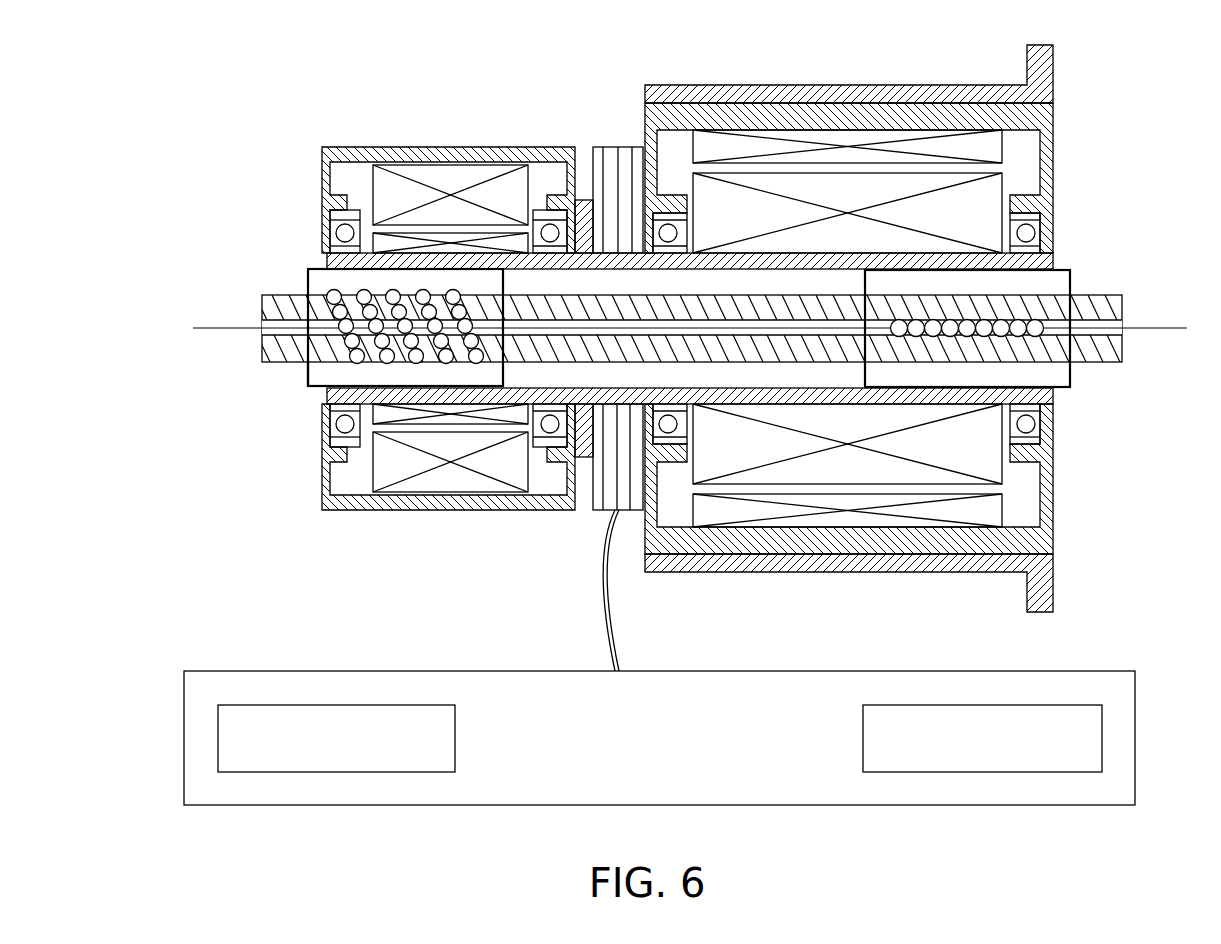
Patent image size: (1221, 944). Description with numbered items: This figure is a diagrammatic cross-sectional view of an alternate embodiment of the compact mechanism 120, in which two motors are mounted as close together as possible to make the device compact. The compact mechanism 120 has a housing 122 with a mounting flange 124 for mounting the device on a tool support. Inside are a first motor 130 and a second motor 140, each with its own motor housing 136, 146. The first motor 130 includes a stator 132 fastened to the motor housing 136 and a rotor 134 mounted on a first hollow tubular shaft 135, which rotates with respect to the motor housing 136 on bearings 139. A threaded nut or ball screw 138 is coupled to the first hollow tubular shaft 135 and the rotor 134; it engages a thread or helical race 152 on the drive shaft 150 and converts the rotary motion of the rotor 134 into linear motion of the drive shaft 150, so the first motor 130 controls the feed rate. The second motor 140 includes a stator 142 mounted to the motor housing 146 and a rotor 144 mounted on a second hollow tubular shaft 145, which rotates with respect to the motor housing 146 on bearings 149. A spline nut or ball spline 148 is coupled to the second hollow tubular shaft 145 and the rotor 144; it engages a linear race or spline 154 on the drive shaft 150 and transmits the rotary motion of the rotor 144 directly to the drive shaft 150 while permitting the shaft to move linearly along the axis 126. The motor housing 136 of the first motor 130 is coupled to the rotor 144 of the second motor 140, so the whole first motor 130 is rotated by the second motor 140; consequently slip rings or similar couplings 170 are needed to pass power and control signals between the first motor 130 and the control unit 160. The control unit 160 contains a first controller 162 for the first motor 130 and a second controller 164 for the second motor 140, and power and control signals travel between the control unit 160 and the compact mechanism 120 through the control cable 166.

The compact mechanism 120 is at (563, 128).
The housing 122 is at (733, 95).
The mounting flange 124 is at (1053, 72).
The axis 126 is at (1107, 347).
The first motor 130 is at (345, 311).
The stator 132 is at (396, 197).
The rotor 134 is at (452, 238).
The first hollow tubular shaft 135 is at (351, 318).
The motor housing 136 is at (438, 510).
The ball screw 138 is at (302, 372).
The bearings 139 is at (294, 431).
The second motor 140 is at (922, 328).
The stator 142 is at (985, 510).
The rotor 144 is at (813, 187).
The second hollow tubular shaft 145 is at (1053, 262).
The motor housing 146 is at (1053, 538).
The ball spline 148 is at (1060, 282).
The bearings 149 is at (1066, 425).
The drive shaft 150 is at (703, 329).
The helical race 152 is at (610, 310).
The spline 154 is at (708, 332).
The control unit 160 is at (659, 765).
The first controller 162 is at (328, 762).
The second controller 164 is at (980, 755).
The control cable 166 is at (600, 548).
The slip rings 170 is at (612, 158).